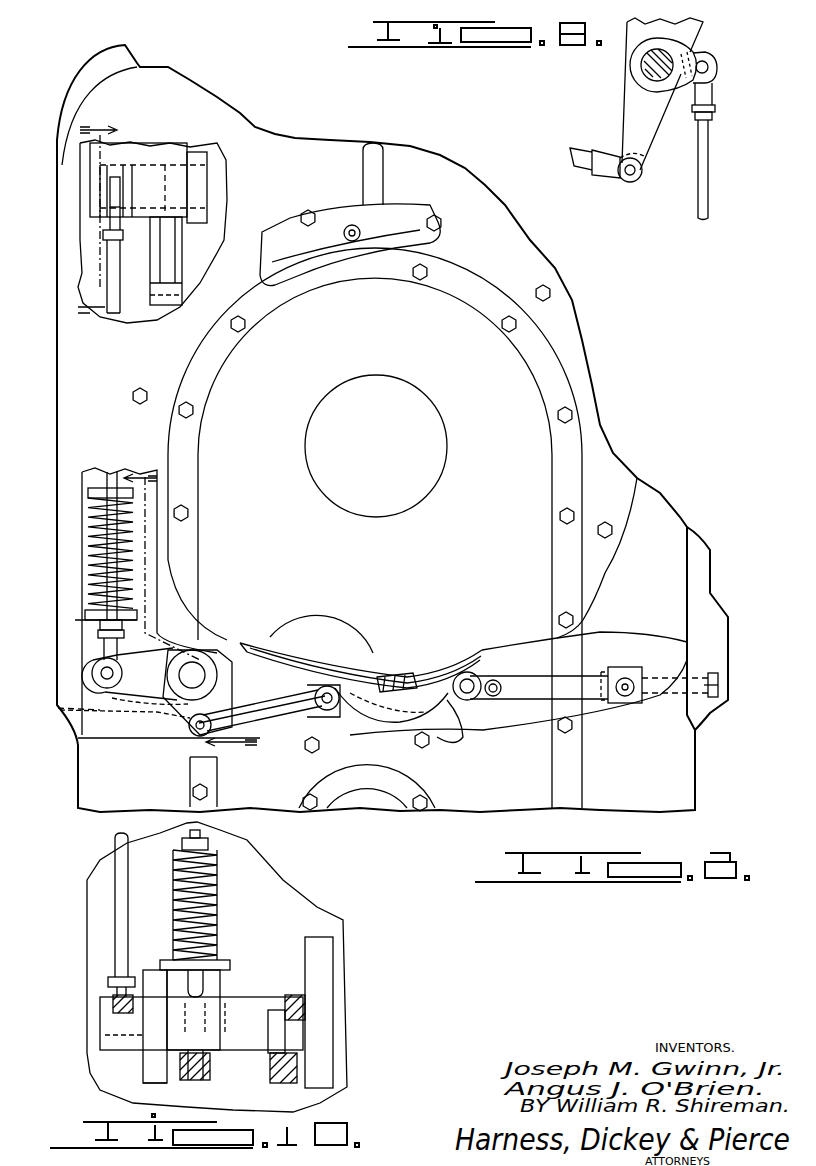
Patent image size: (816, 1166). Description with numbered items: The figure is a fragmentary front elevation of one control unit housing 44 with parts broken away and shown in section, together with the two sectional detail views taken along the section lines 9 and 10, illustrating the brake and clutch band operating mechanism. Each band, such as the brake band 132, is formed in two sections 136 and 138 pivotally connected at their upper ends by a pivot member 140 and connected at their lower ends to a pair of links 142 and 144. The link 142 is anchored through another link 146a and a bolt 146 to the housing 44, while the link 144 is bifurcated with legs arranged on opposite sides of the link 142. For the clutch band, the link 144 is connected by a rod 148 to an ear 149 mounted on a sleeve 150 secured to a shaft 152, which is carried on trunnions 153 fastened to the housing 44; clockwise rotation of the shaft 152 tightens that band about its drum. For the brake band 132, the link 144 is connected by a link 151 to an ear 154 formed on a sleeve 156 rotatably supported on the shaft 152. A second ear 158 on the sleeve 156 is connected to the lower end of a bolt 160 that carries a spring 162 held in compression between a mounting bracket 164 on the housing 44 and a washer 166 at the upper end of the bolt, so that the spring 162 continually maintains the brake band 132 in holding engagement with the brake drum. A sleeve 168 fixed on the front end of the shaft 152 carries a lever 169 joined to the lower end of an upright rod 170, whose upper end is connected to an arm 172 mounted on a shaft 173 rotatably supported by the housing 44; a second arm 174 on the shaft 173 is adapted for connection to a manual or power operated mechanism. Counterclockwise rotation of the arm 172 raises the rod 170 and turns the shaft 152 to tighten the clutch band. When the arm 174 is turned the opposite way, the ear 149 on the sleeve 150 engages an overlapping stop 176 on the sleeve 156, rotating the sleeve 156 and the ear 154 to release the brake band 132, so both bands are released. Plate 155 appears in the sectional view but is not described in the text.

In FIG. 8, the housing 44 is at (653, 507).
In FIG. 8, the pivot member 140 is at (353, 226).
In FIG. 8, the shaft 173 is at (158, 163).
In FIG. 9, the shaft 173 is at (643, 70).
In FIG. 8, the arm 172 is at (103, 200).
In FIG. 9, the arm 172 is at (700, 90).
In FIG. 8, the upright rod 170 is at (112, 253).
In FIG. 9, the upright rod 170 is at (708, 157).
In FIG. 10, the upright rod 170 is at (150, 872).
In FIG. 8, the second arm 174 is at (180, 256).
In FIG. 9, the second arm 174 is at (635, 115).
In FIG. 8, the section line 9— 9 is at (97, 223).
In FIG. 8, the section line 10— 10 is at (189, 608).
In FIG. 8, the spring 162 is at (95, 574).
In FIG. 10, the spring 162 is at (218, 902).
In FIG. 8, the lever 169 is at (140, 673).
In FIG. 8, the shaft 152 is at (192, 667).
In FIG. 10, the shaft 152 is at (110, 1017).
In FIG. 8, the trunnions 153 is at (93, 720).
In FIG. 10, the trunnions 153 is at (322, 968).
In FIG. 8, the stop 176 is at (212, 715).
In FIG. 10, the stop 176 is at (268, 1053).
In FIG. 8, the ear 149 is at (222, 712).
In FIG. 10, the ear 149 is at (287, 1067).
In FIG. 8, the ear 154 is at (125, 726).
In FIG. 10, the ear 154 is at (182, 1067).
In FIG. 8, the second ear 158 is at (57, 716).
In FIG. 8, the link 151 is at (270, 747).
In FIG. 10, the link 151 is at (165, 1080).
In FIG. 8, the rod 148 is at (300, 690).
In FIG. 10, the rod 148 is at (280, 1083).
In FIG. 8, the band section 136 is at (305, 660).
In FIG. 8, the band section 138 is at (461, 658).
In FIG. 8, the brake band 132 is at (501, 655).
In FIG. 8, the link 146a is at (581, 677).
In FIG. 8, the bolt 146 is at (716, 677).
In FIG. 8, the link 142 is at (460, 728).
In FIG. 8, the link 144 is at (269, 711).
In FIG. 10, the washer 166 is at (207, 843).
In FIG. 10, the bolt 160 is at (218, 877).
In FIG. 10, the plate 155 is at (152, 967).
In FIG. 10, the mounting bracket 164 is at (217, 967).
In FIG. 10, the sleeve 156 is at (223, 980).
In FIG. 10, the sleeve 150 is at (243, 993).
In FIG. 10, the sleeve 168 is at (107, 1000).